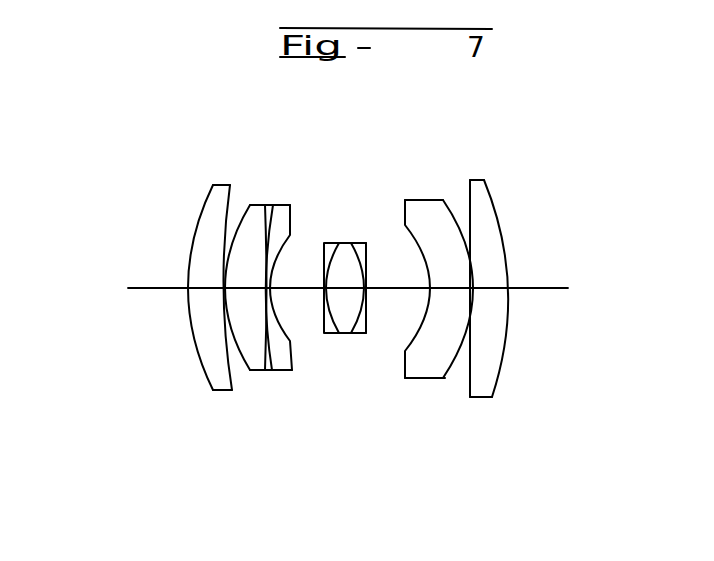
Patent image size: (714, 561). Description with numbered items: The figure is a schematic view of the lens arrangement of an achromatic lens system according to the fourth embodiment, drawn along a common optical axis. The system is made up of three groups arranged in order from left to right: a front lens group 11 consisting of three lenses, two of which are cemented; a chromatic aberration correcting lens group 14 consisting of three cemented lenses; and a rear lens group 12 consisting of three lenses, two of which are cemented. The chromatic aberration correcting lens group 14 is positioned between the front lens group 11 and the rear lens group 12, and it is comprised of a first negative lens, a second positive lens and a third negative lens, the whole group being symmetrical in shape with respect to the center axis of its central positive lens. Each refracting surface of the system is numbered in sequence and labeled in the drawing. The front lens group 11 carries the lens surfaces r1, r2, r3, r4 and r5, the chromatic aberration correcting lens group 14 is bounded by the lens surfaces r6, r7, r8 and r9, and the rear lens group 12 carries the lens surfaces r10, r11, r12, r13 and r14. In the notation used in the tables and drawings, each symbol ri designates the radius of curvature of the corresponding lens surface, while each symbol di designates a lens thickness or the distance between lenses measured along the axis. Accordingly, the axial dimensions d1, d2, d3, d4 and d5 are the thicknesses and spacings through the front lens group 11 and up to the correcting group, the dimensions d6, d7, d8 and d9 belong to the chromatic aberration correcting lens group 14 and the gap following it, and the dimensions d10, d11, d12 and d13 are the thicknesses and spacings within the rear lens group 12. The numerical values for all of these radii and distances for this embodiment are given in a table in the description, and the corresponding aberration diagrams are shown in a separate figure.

The front lens group 11 is at (193, 312).
The chromatic aberration correcting lens group 14 is at (330, 312).
The rear lens group 12 is at (493, 313).
The lens surface r1 is at (213, 185).
The lens surface r2 is at (224, 185).
The lens surface r3 is at (247, 206).
The lens surface r4 is at (254, 205).
The lens surface r5 is at (260, 205).
The lens surface r6 is at (290, 205).
The lens surface r7 is at (324, 243).
The lens surface r8 is at (339, 243).
The lens surface r9 is at (365, 243).
The lens surface r10 is at (404, 200).
The lens surface r11 is at (431, 288).
The lens surface r12 is at (443, 200).
The lens surface r13 is at (483, 179).
The lens surface r14 is at (485, 179).
The lens thickness or distance d1 is at (203, 290).
The lens thickness or distance d2 is at (224, 290).
The lens thickness or distance d3 is at (265, 292).
The lens thickness or distance d4 is at (278, 300).
The lens thickness or distance d5 is at (324, 292).
The lens thickness or distance d6 is at (338, 300).
The lens thickness or distance d7 is at (352, 298).
The lens thickness or distance d8 is at (364, 300).
The lens thickness or distance d9 is at (388, 300).
The lens thickness or distance d10 is at (431, 340).
The lens thickness or distance d11 is at (465, 292).
The lens thickness or distance d12 is at (472, 300).
The lens thickness or distance d13 is at (497, 300).